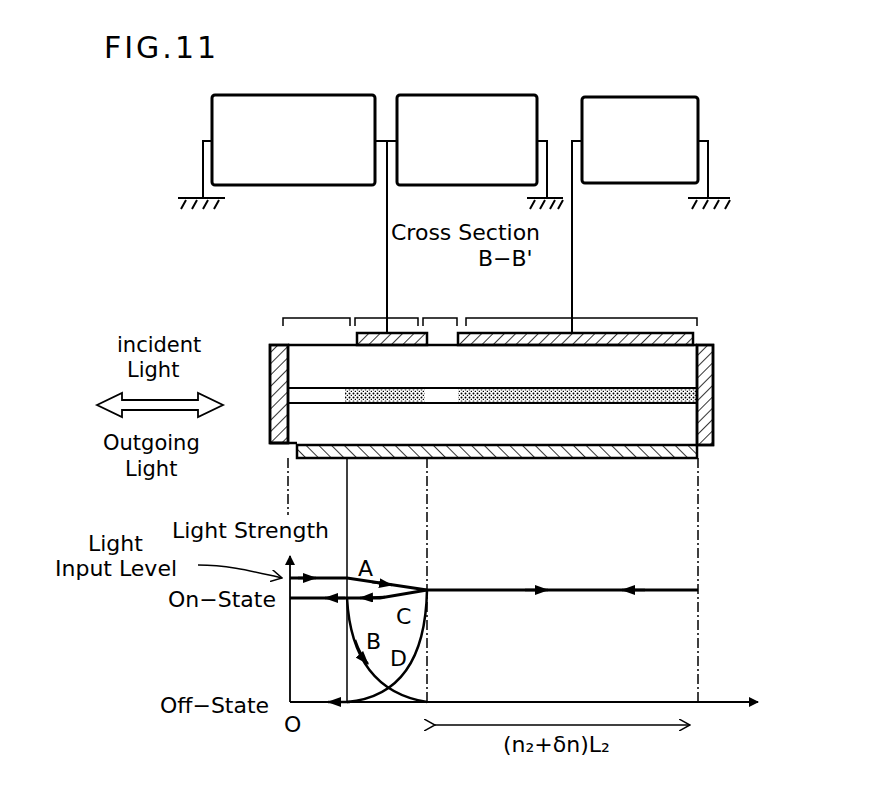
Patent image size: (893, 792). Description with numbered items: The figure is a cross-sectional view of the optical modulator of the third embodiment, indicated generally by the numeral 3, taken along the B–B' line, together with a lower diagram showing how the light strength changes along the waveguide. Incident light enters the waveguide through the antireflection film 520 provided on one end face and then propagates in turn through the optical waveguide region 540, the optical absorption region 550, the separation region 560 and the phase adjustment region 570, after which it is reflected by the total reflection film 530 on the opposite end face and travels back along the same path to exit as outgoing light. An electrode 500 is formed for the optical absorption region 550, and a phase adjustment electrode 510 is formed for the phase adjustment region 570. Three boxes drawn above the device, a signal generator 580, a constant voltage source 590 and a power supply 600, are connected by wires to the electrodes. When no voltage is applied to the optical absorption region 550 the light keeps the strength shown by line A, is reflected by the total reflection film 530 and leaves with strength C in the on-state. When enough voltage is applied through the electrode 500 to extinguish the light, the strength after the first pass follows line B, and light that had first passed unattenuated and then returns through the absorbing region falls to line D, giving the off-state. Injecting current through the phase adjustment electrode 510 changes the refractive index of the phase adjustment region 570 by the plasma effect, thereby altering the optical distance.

The optical switching device 3 is at (724, 66).
The electrode 500 is at (395, 333).
The phase adjustment electrode 510 is at (622, 333).
The antireflection film 520 is at (270, 425).
The total reflection film 530 is at (713, 390).
The optical waveguide region 540 is at (312, 318).
The optical absorption region 550 is at (386, 318).
The separation region 560 is at (457, 300).
The phase adjustment region 570 is at (500, 318).
The signal generator 580 is at (274, 97).
The constant voltage source 590 is at (440, 98).
The power supply 600 is at (604, 100).